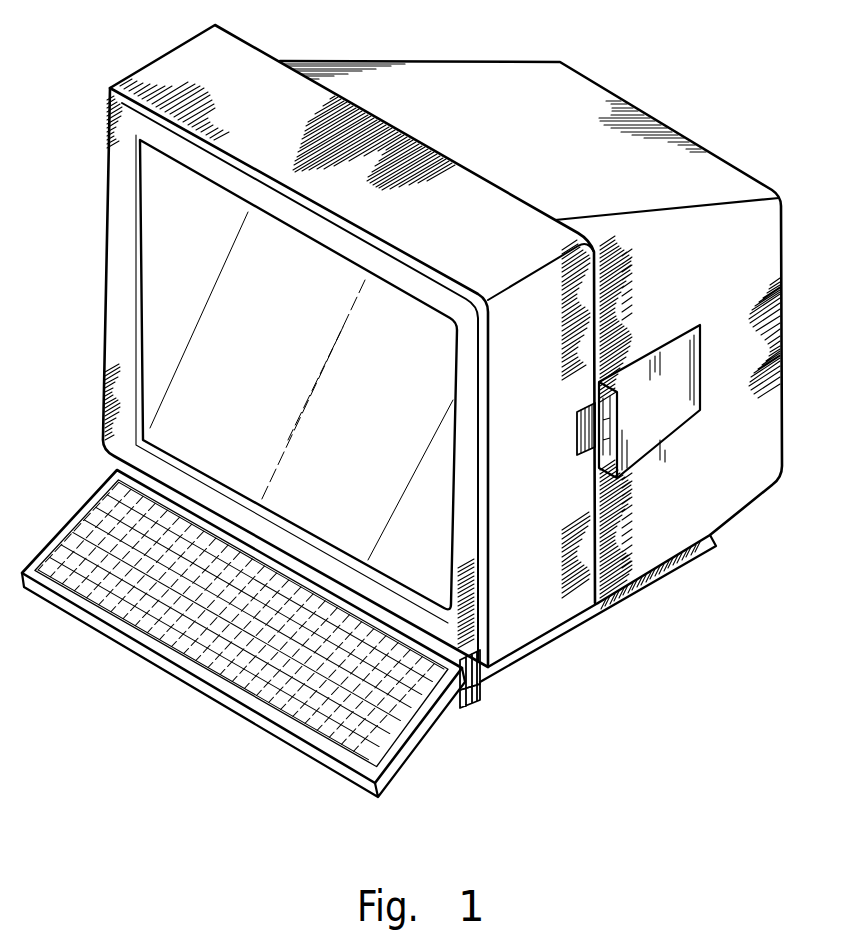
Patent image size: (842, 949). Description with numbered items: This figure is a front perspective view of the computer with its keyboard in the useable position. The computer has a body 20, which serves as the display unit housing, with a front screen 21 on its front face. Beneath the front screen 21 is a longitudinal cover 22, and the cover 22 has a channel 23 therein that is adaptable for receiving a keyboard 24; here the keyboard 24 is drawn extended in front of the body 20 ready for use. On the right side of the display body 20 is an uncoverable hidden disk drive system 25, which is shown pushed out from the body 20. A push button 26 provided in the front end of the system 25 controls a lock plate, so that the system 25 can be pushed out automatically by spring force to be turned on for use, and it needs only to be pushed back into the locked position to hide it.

The body 20 is at (428, 83).
The front screen 21 is at (163, 335).
The longitudinal cover 22 is at (487, 690).
The channel 23 is at (458, 712).
The keyboard 24 is at (188, 673).
The hidden disk drive system 25 is at (663, 413).
The push button 26 is at (578, 458).